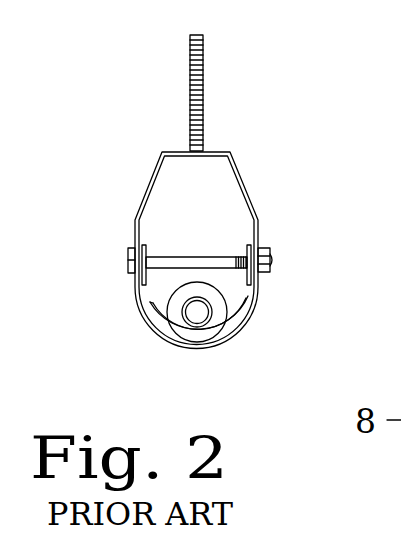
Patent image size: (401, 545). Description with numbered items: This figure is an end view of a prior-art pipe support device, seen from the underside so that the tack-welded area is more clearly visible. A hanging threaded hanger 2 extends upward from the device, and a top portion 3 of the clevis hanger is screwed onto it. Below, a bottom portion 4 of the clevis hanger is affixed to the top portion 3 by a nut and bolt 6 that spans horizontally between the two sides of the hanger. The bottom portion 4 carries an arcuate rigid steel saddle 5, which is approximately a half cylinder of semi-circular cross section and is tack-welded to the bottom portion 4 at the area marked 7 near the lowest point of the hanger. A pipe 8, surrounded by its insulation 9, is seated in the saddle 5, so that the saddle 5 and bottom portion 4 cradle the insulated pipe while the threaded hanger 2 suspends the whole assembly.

The threaded hanger 2 is at (200, 98).
The top portion of the clevis hanger 3 is at (243, 183).
The bottom portion of the clevis hanger 4 is at (248, 318).
The arcuate rigid steel saddle 5 is at (242, 302).
The nut and bolt 6 is at (132, 250).
The tack-welded area 7 is at (187, 347).
The pipe 8 is at (182, 305).
The insulation 9 is at (173, 317).